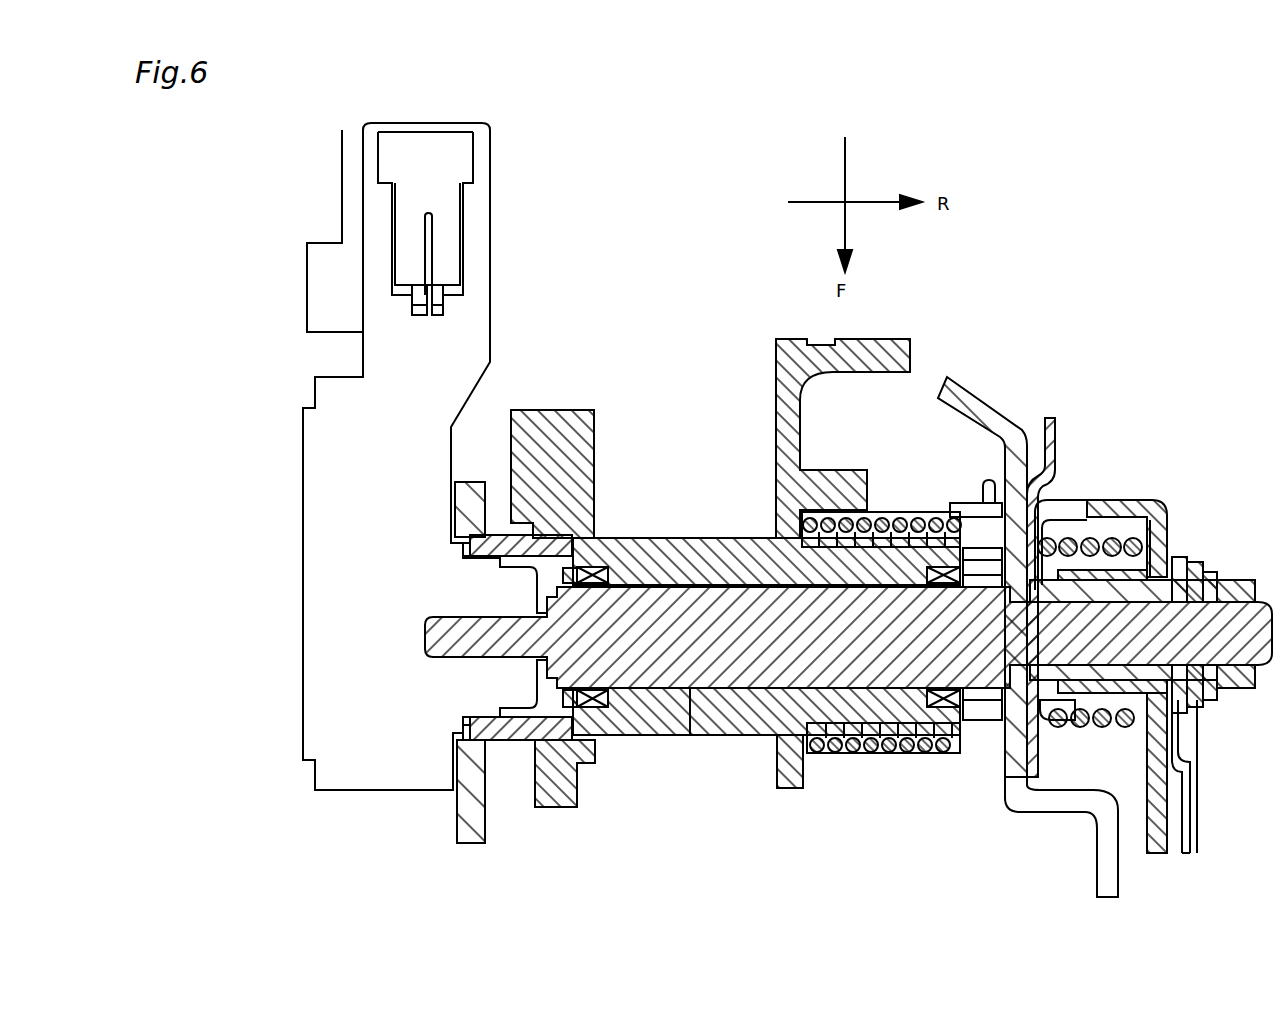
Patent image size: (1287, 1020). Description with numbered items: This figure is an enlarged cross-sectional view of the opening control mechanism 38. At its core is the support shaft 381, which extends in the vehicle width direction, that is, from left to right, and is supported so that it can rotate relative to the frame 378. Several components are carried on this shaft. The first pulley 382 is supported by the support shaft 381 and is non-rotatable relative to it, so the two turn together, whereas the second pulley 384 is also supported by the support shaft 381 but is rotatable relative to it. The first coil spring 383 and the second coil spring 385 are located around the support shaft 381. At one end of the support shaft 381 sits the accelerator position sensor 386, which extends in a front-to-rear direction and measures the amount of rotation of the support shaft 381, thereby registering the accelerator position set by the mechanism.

The opening control mechanism 38 is at (1200, 468).
The frame 378 is at (772, 378).
The support shaft 381 is at (690, 648).
The first pulley 382 is at (1017, 775).
The first coil spring 383 is at (935, 752).
The second pulley 384 is at (1123, 507).
The second coil spring 385 is at (1165, 520).
The accelerator position sensor 386 is at (355, 497).